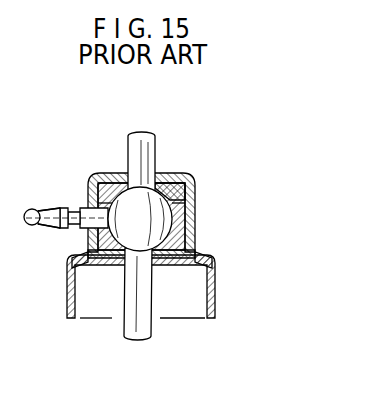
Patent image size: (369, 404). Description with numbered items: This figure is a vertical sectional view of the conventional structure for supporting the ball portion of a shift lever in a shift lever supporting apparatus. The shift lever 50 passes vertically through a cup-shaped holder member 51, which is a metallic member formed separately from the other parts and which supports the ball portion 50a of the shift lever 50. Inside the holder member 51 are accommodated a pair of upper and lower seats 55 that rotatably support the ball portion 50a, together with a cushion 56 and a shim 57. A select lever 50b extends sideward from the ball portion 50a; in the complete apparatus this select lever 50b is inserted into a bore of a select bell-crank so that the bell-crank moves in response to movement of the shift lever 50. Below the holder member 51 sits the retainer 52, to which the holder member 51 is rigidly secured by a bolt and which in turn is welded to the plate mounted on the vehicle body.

The shift lever 50 is at (155, 143).
The ball portion 50a is at (120, 188).
The select lever 50b is at (32, 209).
The holder member 51 is at (92, 178).
The retainer 52 is at (67, 300).
The seats 55 is at (187, 226).
The cushion 56 is at (190, 182).
The shim 57 is at (190, 248).